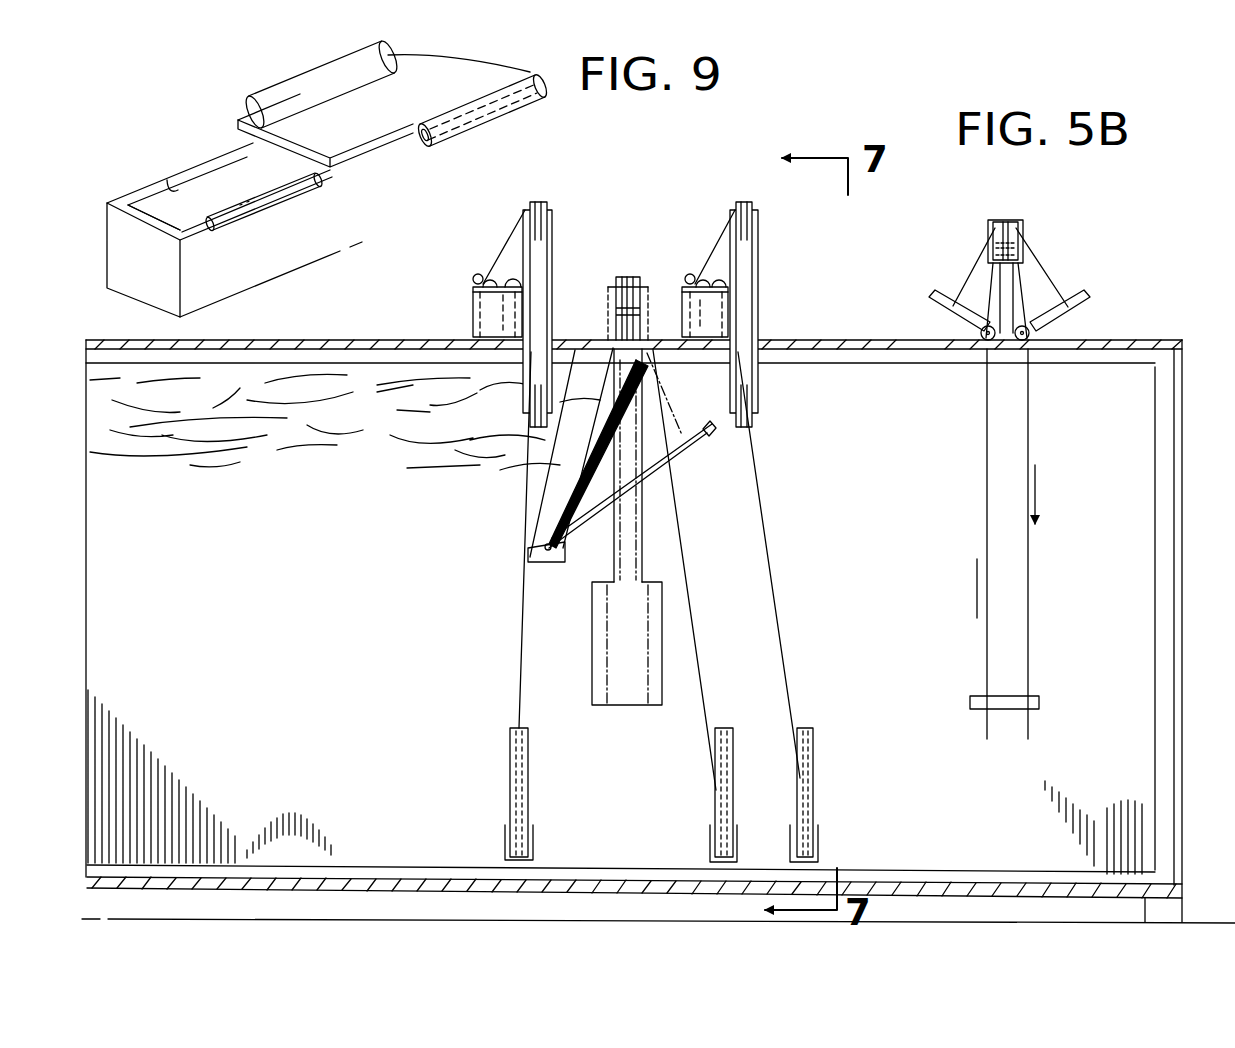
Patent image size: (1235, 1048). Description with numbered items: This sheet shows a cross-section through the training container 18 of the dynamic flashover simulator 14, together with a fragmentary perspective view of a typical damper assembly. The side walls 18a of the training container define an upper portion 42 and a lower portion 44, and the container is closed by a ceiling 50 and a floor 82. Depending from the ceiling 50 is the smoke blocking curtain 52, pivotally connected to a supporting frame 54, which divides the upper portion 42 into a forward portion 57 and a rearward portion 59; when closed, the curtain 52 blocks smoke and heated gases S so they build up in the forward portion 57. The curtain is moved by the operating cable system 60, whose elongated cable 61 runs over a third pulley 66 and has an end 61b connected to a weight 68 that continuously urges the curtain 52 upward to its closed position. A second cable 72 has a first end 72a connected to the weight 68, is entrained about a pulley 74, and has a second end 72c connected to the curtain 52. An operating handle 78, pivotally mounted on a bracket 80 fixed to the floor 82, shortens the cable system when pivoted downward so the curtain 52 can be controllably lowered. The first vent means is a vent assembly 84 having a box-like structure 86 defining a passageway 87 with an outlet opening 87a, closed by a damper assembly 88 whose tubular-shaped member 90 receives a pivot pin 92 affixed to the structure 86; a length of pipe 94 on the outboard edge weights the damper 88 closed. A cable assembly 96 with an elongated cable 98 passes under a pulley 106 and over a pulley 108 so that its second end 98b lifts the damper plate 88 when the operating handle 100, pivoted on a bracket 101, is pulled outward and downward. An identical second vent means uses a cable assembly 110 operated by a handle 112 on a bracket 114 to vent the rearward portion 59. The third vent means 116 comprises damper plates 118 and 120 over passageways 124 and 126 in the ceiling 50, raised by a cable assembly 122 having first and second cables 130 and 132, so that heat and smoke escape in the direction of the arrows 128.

In FIG. 5B, the dynamic flashover simulator 14 is at (1162, 316).
In FIG. 5B, the training container 18 is at (372, 338).
In FIG. 5B, the side walls 18a is at (249, 655).
In FIG. 5B, the upper portion 42 is at (345, 422).
In FIG. 5B, the lower portion 44 is at (615, 782).
In FIG. 5B, the ceiling 50 is at (788, 353).
In FIG. 5B, the blocking curtain 52 is at (684, 450).
In FIG. 5B, the supporting frame 54 is at (552, 500).
In FIG. 5B, the forward portion 57 is at (197, 465).
In FIG. 5B, the rearward portion 59 is at (905, 417).
In FIG. 5B, the operating cable system 60 is at (641, 548).
In FIG. 5B, the elongated cable 61 is at (703, 699).
In FIG. 5B, the cable end 61b is at (606, 562).
In FIG. 5B, the third pulley 66 is at (615, 277).
In FIG. 5B, the weight 68 is at (627, 694).
In FIG. 5B, the second cable 72 is at (643, 502).
In FIG. 5B, the first end 72a is at (643, 568).
In FIG. 5B, the second end 72c is at (638, 362).
In FIG. 5B, the pulley 74 is at (640, 273).
In FIG. 5B, the operating handle 78 is at (717, 792).
In FIG. 5B, the bracket 80 is at (711, 838).
In FIG. 5B, the floor 82 is at (856, 876).
In FIG. 9, the vent assembly 84 is at (217, 128).
In FIG. 5B, the vent assembly 84 is at (509, 233).
In FIG. 9, the box-like structure 86 is at (234, 230).
In FIG. 5B, the box-like structure 86 is at (475, 313).
In FIG. 9, the passageway 87 is at (152, 175).
In FIG. 5B, the passageway 87 is at (503, 325).
In FIG. 9, the outlet opening 87a is at (170, 180).
In FIG. 9, the damper assembly 88 is at (391, 134).
In FIG. 5B, the damper assembly 88 is at (512, 283).
In FIG. 9, the tubular-shaped member 90 is at (490, 113).
In FIG. 9, the pivot pin 92 is at (270, 205).
In FIG. 9, the pipe 94 is at (300, 80).
In FIG. 5B, the pipe 94 is at (472, 279).
In FIG. 5B, the cable assembly 96 is at (521, 653).
In FIG. 5B, the elongated cable 98 is at (519, 706).
In FIG. 5B, the second end 98b is at (507, 252).
In FIG. 5B, the operating handle 100 is at (512, 792).
In FIG. 5B, the bracket 101 is at (505, 838).
In FIG. 5B, the pulley 106 is at (533, 420).
In FIG. 5B, the pulley 108 is at (546, 205).
In FIG. 5B, the cable assembly 110 is at (776, 621).
In FIG. 5B, the handle 112 is at (814, 742).
In FIG. 5B, the bracket 114 is at (820, 838).
In FIG. 5B, the third vent means 116 is at (1034, 223).
In FIG. 5B, the damper plate 118 is at (950, 296).
In FIG. 5B, the damper plate 120 is at (1073, 297).
In FIG. 5B, the cable assembly 122 is at (1030, 553).
In FIG. 5B, the passageway 124 is at (928, 357).
In FIG. 5B, the passageway 126 is at (1065, 355).
In FIG. 5B, the arrows 128 is at (931, 320).
In FIG. 5B, the first cable 130 is at (1030, 656).
In FIG. 5B, the second cable 132 is at (985, 656).